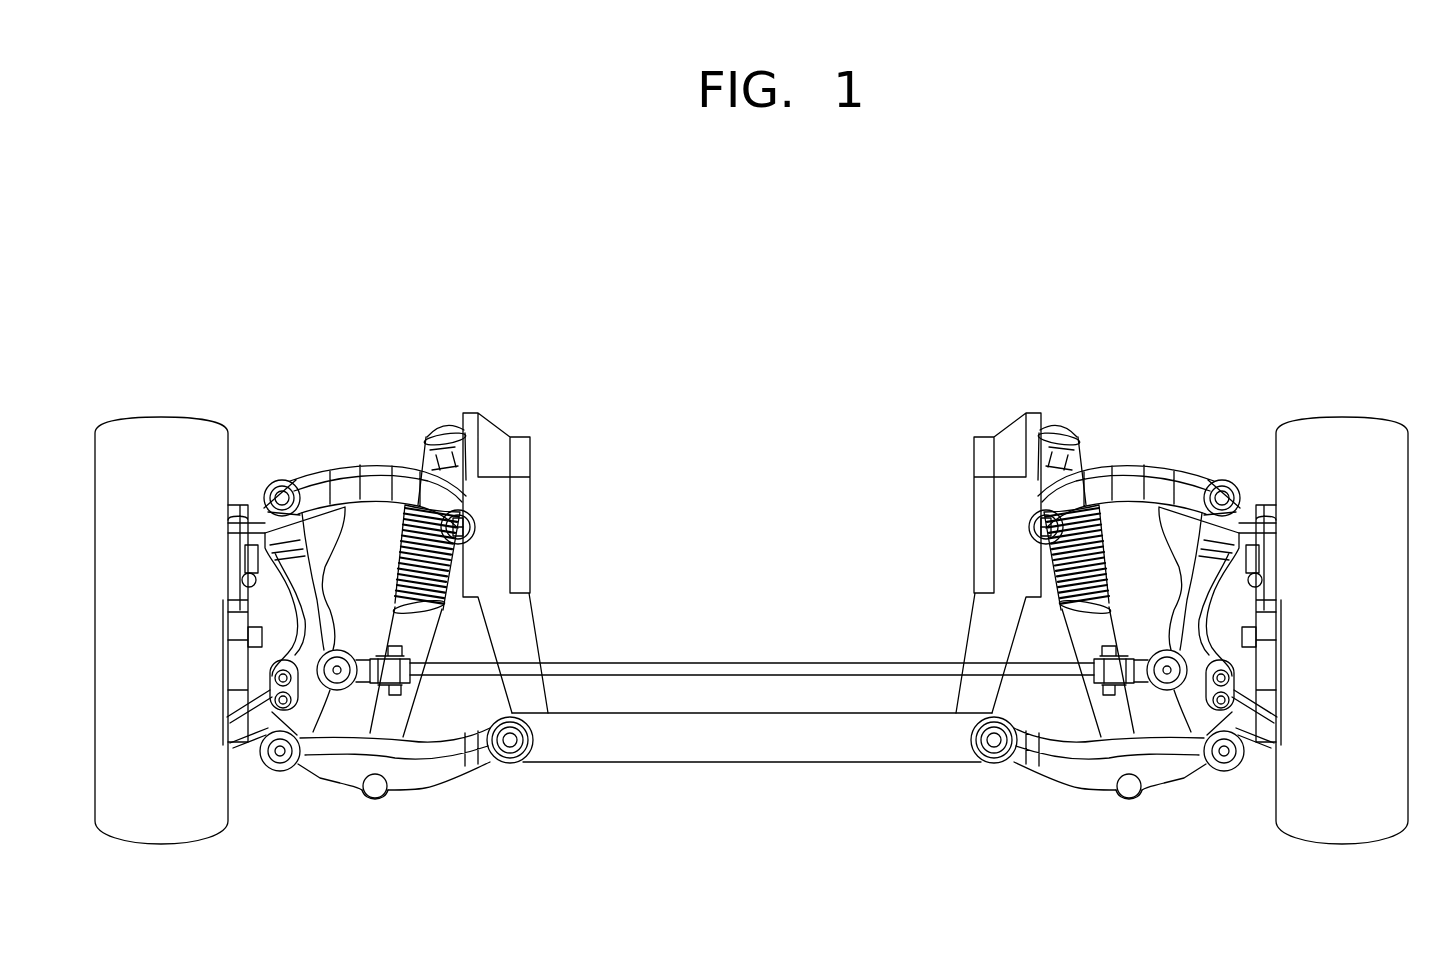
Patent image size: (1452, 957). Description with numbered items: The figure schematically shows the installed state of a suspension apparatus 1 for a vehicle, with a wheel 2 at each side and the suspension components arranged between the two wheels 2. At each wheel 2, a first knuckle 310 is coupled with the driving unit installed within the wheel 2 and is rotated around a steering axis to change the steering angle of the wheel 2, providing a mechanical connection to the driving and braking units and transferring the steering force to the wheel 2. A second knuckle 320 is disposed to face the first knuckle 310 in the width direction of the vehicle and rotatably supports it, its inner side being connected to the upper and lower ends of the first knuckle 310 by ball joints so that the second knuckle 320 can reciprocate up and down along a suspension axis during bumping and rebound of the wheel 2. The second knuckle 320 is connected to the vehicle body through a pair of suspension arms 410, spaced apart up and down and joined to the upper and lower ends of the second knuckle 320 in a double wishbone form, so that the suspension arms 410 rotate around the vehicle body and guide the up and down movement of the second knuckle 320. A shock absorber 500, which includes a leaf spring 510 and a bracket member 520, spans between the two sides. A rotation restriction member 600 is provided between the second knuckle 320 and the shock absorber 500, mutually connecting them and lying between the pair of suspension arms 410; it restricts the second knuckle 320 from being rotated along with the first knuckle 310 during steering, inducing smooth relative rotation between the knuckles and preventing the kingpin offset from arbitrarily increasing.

The suspension apparatus 1 is at (403, 418).
The wheel 2 is at (170, 455).
The first knuckle 310 is at (254, 716).
The second knuckle 320 is at (312, 587).
The suspension arm 410 is at (357, 470).
The shock absorber 500 is at (893, 519).
The leaf spring 510 is at (787, 664).
The bracket member 520 is at (407, 632).
The rotation restriction member 600 is at (337, 692).